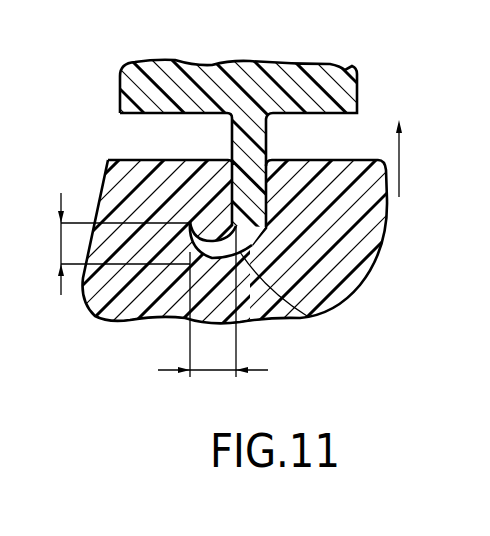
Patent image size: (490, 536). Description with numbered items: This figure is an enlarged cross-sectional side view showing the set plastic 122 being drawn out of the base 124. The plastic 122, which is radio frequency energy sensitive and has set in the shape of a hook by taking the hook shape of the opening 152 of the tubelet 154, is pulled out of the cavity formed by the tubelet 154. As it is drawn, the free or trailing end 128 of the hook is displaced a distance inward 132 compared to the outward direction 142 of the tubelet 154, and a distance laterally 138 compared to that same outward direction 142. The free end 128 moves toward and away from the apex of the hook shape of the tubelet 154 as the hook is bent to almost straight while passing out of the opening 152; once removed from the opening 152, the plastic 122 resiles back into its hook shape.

The radio frequency energy sensitive plastic 122 is at (225, 87).
The base 124 is at (355, 273).
The free or trailing end 128 is at (166, 319).
The distance inward 132 is at (61, 243).
The distance laterally 138 is at (213, 372).
The outward direction 142 is at (399, 170).
The opening 152 is at (190, 223).
The tubelet 154 is at (300, 308).